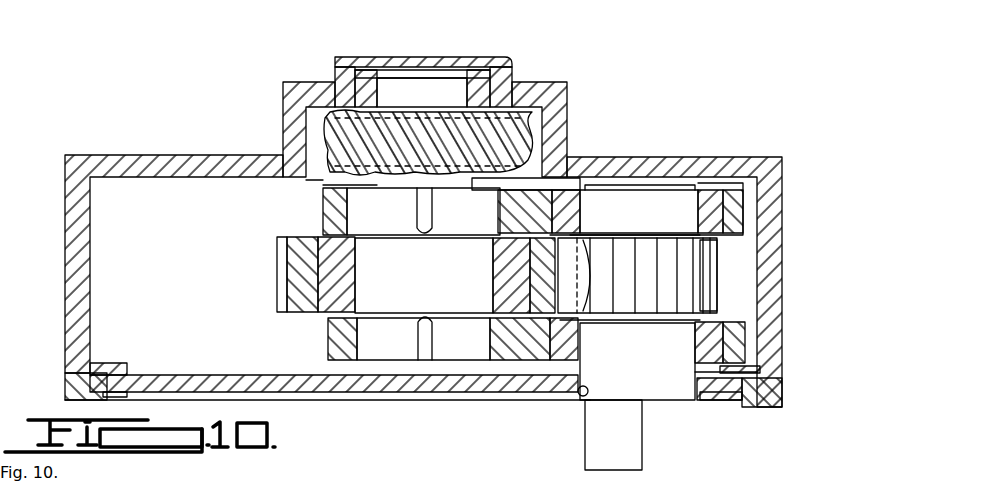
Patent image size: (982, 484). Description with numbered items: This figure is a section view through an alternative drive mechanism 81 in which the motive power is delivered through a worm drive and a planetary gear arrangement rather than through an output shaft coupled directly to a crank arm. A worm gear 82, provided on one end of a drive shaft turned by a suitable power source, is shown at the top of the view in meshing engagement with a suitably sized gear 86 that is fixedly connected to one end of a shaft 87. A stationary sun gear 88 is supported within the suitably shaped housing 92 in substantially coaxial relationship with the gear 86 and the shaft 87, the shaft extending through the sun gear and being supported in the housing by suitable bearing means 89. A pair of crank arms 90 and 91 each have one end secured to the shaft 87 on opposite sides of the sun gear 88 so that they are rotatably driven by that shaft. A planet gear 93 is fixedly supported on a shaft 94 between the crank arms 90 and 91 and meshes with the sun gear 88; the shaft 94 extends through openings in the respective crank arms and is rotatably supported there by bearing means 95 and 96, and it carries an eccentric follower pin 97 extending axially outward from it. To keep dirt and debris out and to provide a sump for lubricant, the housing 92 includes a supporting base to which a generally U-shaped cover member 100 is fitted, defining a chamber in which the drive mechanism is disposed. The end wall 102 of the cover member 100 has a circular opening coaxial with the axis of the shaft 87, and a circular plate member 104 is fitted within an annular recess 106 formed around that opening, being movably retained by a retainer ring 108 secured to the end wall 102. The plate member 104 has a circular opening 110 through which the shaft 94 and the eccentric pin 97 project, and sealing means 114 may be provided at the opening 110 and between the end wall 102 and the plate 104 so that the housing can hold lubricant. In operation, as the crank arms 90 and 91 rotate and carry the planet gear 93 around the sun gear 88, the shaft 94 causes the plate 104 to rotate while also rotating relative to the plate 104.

The drive mechanism 81 is at (456, 232).
The worm gear 82 is at (517, 72).
The gear 86 is at (560, 108).
The shaft 87 is at (450, 88).
The stationary sun gear 88 is at (277, 262).
The bearing means 89 is at (328, 305).
The crank arm 90 is at (548, 190).
The crank arm 91 is at (513, 355).
The housing 92 is at (793, 253).
The planet gear 93 is at (703, 278).
The shaft 94 is at (653, 197).
The bearing means 95 is at (750, 188).
The bearing means 96 is at (717, 340).
The eccentric follower pin 97 is at (630, 395).
The cover member 100 is at (773, 301).
The end wall 102 is at (730, 400).
The circular plate member 104 is at (407, 392).
The annular recess 106 is at (717, 373).
The retainer ring 108 is at (753, 364).
The circular opening 110 is at (580, 403).
The sealing means 114 is at (703, 400).